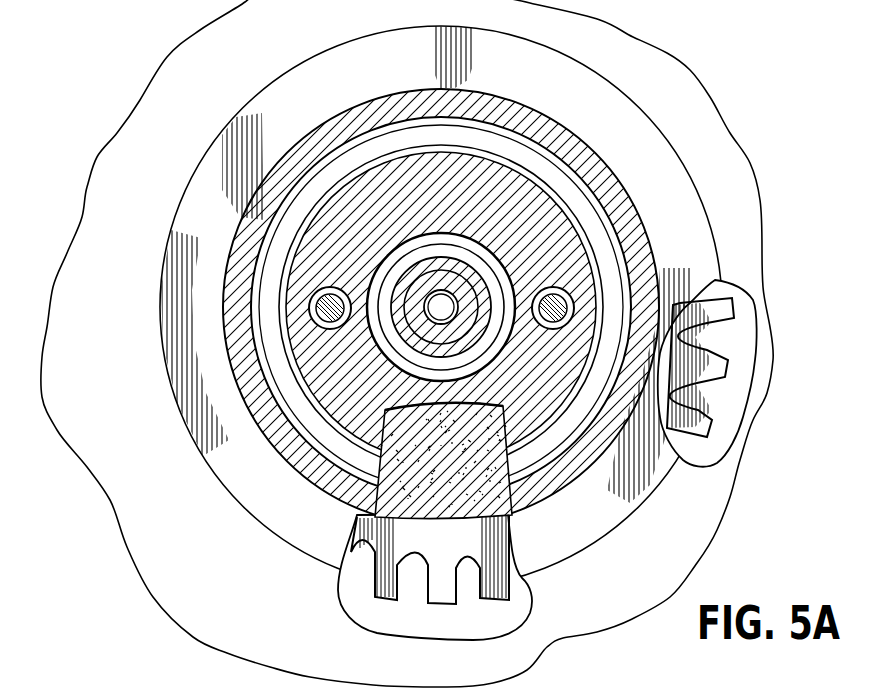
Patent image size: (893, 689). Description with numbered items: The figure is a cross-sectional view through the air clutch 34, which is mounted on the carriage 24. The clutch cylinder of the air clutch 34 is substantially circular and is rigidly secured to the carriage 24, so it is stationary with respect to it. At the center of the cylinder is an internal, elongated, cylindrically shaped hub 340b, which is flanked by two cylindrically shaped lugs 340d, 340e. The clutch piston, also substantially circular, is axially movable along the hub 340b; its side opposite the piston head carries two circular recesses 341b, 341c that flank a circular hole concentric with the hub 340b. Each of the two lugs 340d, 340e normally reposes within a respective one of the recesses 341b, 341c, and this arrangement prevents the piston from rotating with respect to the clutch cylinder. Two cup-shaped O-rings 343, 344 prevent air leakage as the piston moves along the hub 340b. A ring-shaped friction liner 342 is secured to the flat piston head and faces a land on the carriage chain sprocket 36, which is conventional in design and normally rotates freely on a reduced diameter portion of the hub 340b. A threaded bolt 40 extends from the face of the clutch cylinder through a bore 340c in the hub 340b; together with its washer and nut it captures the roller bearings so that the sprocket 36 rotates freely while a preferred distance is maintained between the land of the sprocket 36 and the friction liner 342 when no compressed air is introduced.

The carriage 24 is at (698, 120).
The air clutch 34 is at (342, 125).
The cup-shaped O-ring 343 is at (510, 152).
The cup-shaped O-ring 344 is at (405, 247).
The hub 340b is at (440, 311).
The bore 340c is at (436, 292).
The lug 340d is at (330, 309).
The lug 340e is at (543, 297).
The circular recess 341b is at (337, 287).
The circular recess 341c is at (545, 313).
The threaded bolt 40 is at (448, 311).
The friction liner 342 is at (407, 518).
The carriage chain sprocket 36 is at (490, 580).